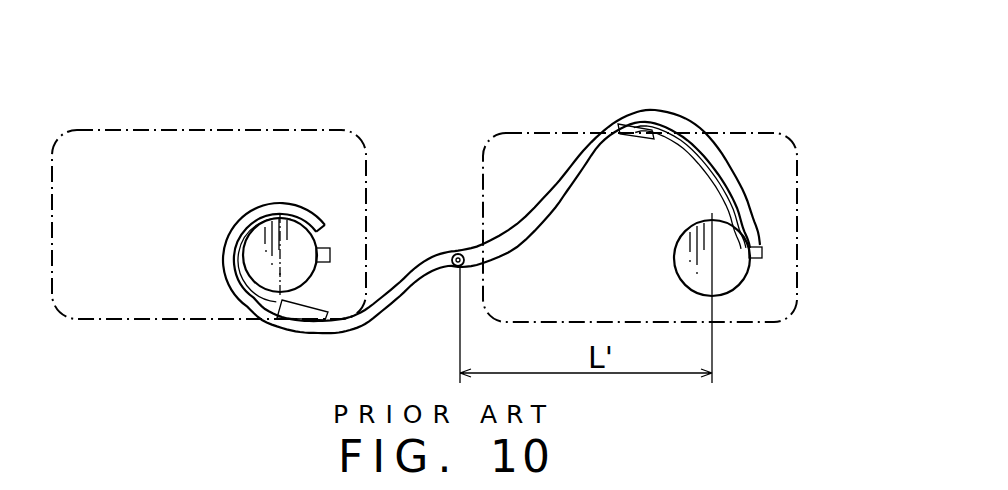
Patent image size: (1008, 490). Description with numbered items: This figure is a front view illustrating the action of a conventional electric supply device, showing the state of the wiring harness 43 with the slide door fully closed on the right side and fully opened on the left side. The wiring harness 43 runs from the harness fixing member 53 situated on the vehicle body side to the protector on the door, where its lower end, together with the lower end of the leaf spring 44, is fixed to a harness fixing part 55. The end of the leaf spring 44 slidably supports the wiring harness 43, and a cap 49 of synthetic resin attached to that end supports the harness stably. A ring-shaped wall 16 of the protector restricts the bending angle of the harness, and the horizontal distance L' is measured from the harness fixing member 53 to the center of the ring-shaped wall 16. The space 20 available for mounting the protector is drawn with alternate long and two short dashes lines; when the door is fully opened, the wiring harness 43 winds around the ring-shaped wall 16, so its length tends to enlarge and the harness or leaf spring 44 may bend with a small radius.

The ring-shaped wall 16 is at (322, 279).
The space 20 is at (115, 321).
The wiring harness 43 is at (366, 325).
The leaf spring 44 is at (277, 320).
The cap 49 is at (632, 125).
The harness fixing member 53 is at (455, 253).
The harness fixing part 55 is at (330, 250).